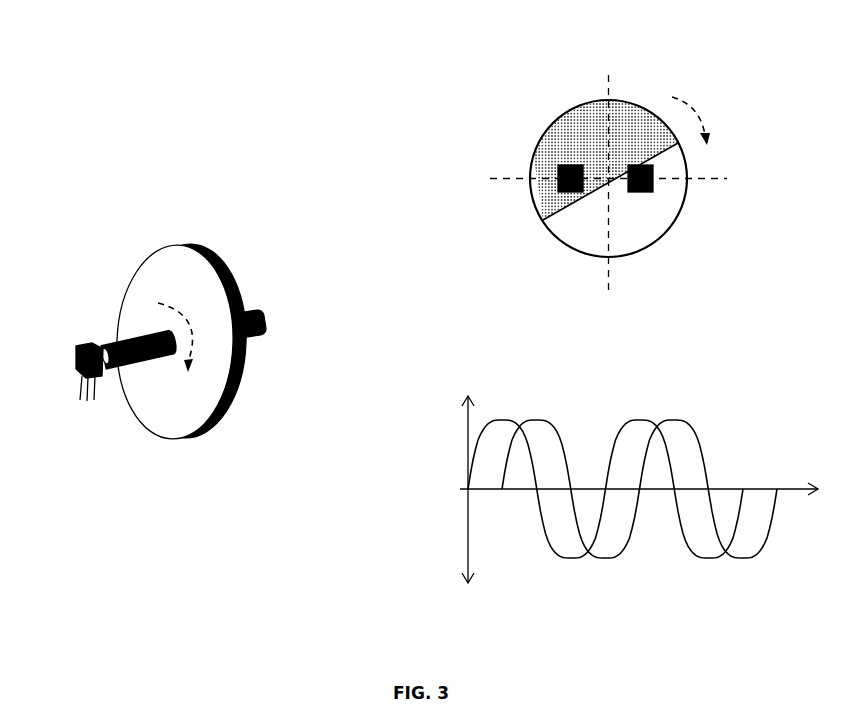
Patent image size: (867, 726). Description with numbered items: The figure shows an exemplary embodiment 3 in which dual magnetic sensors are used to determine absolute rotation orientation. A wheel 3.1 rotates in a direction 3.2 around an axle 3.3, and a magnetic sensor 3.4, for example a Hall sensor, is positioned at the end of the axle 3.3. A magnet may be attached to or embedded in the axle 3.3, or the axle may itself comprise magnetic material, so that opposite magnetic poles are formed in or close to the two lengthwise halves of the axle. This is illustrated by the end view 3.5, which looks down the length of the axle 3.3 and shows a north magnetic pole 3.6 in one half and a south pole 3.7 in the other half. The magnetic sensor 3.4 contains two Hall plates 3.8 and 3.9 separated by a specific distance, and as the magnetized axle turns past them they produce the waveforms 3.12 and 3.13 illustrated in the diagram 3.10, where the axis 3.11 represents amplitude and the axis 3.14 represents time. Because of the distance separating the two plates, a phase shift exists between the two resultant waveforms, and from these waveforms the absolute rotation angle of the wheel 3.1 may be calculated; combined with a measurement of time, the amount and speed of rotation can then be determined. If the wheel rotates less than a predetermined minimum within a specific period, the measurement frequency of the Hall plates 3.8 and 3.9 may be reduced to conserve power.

The exemplary embodiment 3 is at (129, 299).
The wheel 3.1 is at (139, 341).
The direction of rotation 3.2 is at (435, 231).
The axle 3.3 is at (455, 191).
The magnetic sensor 3.4 is at (56, 382).
The end view of axle 3.5 is at (561, 157).
The north magnetic pole 3.6 is at (610, 140).
The south pole 3.7 is at (613, 196).
The Hall plate 3.8 is at (576, 204).
The Hall plate 3.9 is at (627, 195).
The waveform diagram 3.10 is at (612, 456).
The amplitude axis 3.11 is at (433, 506).
The waveform 3.12 is at (605, 453).
The waveform 3.13 is at (639, 455).
The time axis 3.14 is at (646, 452).